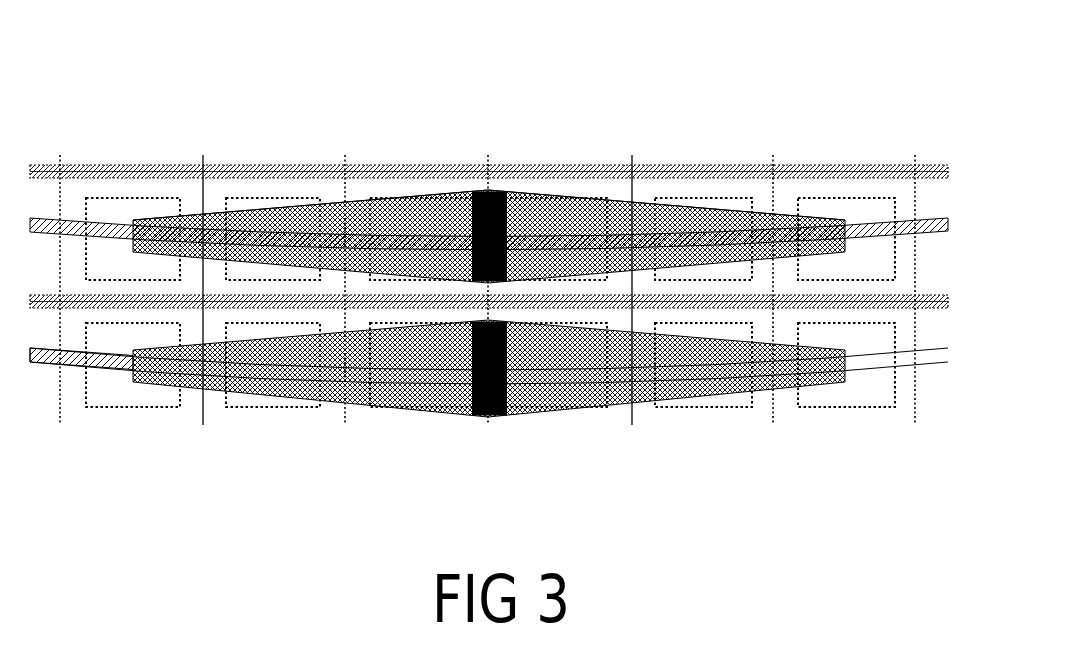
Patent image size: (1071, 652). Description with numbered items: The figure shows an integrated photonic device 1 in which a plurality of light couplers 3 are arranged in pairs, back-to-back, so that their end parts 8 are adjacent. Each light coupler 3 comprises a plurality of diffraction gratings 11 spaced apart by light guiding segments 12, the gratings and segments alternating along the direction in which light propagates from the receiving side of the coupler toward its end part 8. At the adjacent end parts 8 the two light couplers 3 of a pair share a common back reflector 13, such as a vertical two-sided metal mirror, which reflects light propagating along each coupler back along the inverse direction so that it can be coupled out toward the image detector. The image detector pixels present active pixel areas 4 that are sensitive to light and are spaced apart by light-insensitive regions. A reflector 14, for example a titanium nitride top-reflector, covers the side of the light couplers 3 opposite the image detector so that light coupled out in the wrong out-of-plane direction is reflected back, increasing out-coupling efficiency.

The integrated photonic device 1 is at (118, 98).
The light coupler 3 is at (453, 190).
The active pixel area 4 is at (847, 200).
The end part 8 is at (502, 147).
The diffraction grating 11 is at (422, 197).
The light guiding segment 12 is at (223, 213).
The back reflector 13 is at (510, 412).
The reflector 14 is at (357, 405).